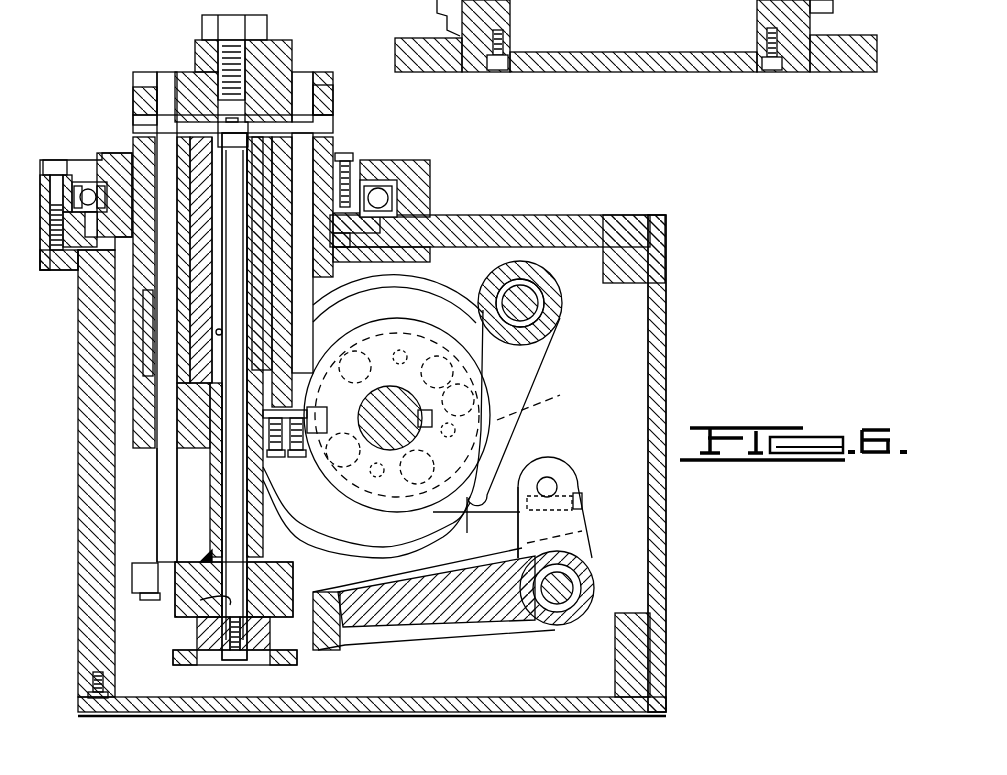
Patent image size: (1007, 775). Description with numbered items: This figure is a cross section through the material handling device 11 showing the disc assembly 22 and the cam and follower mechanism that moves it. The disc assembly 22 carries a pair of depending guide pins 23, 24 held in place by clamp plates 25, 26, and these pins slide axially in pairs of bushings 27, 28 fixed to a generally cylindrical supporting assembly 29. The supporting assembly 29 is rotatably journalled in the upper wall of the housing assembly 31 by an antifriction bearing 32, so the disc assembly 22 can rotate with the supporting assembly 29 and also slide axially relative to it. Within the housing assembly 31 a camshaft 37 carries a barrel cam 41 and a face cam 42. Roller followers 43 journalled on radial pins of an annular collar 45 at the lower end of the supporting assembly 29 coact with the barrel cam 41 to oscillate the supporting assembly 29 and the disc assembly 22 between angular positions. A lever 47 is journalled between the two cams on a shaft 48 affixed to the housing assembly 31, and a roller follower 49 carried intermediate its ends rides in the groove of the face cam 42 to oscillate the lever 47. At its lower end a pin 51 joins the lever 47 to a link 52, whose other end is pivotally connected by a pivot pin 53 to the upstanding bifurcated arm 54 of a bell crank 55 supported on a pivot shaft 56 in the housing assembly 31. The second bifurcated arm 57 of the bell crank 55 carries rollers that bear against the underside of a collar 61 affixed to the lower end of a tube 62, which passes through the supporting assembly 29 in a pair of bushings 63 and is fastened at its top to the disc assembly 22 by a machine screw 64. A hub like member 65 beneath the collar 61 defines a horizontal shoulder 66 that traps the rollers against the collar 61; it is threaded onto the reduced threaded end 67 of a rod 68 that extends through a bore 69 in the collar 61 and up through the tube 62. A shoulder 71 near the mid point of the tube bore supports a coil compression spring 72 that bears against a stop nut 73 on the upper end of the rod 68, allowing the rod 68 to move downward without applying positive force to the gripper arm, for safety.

The material handling device 11 is at (705, 290).
The disc assembly 22 is at (340, 75).
The guide pin 23 is at (166, 78).
The guide pin 24 is at (310, 132).
The clamp plate 25 is at (133, 93).
The clamp plate 26 is at (335, 100).
The bushing 27 is at (122, 247).
The bushing 28 is at (320, 230).
The supporting assembly 29 is at (372, 152).
The housing assembly 31 is at (670, 232).
The antifriction bearing 32 is at (400, 183).
The camshaft 37 is at (425, 402).
The barrel cam 41 is at (333, 527).
The face cam 42 is at (412, 310).
The roller follower 43 is at (343, 452).
The annular collar 45 is at (133, 440).
The lever 47 is at (535, 360).
The shaft 48 is at (533, 283).
The roller follower 49 is at (505, 415).
The pin 51 is at (468, 528).
The link 52 is at (520, 458).
The pivot pin 53 is at (566, 472).
The upstanding bifurcated arm 54 is at (598, 550).
The bell crank 55 is at (565, 561).
The pivot shaft 56 is at (590, 592).
The second bifurcated arm 57 is at (370, 633).
The collar 61 is at (293, 577).
The tube 62 is at (217, 508).
The bushing 63 is at (205, 262).
The machine screw 64 is at (268, 24).
The hub like member 65 is at (185, 665).
The shoulder 66 is at (195, 638).
The threaded end 67 is at (255, 653).
The rod 68 is at (232, 542).
The bore 69 is at (200, 600).
The shoulder 71 is at (218, 330).
The coil compression spring 72 is at (213, 295).
The stop nut 73 is at (218, 150).